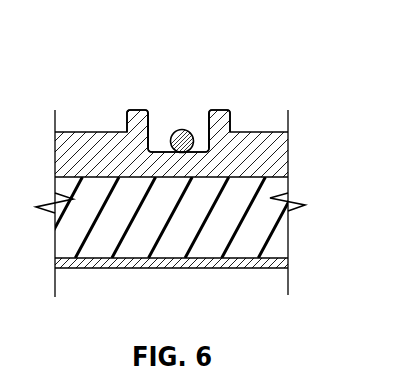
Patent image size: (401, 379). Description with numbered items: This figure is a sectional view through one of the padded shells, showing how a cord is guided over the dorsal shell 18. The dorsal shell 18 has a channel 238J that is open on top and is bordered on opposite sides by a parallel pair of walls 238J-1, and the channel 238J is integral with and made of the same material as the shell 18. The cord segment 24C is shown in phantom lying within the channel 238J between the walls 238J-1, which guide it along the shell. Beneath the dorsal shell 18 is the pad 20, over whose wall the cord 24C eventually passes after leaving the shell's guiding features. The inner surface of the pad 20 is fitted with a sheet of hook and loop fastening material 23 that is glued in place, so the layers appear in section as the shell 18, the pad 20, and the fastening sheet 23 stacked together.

The dorsal shell 18 is at (265, 131).
The pad 20 is at (270, 228).
The sheet of hook and loop fastening material 23 is at (123, 268).
The cord segment 24C is at (185, 130).
The channel 238J is at (162, 103).
The walls 238J-1 is at (130, 110).